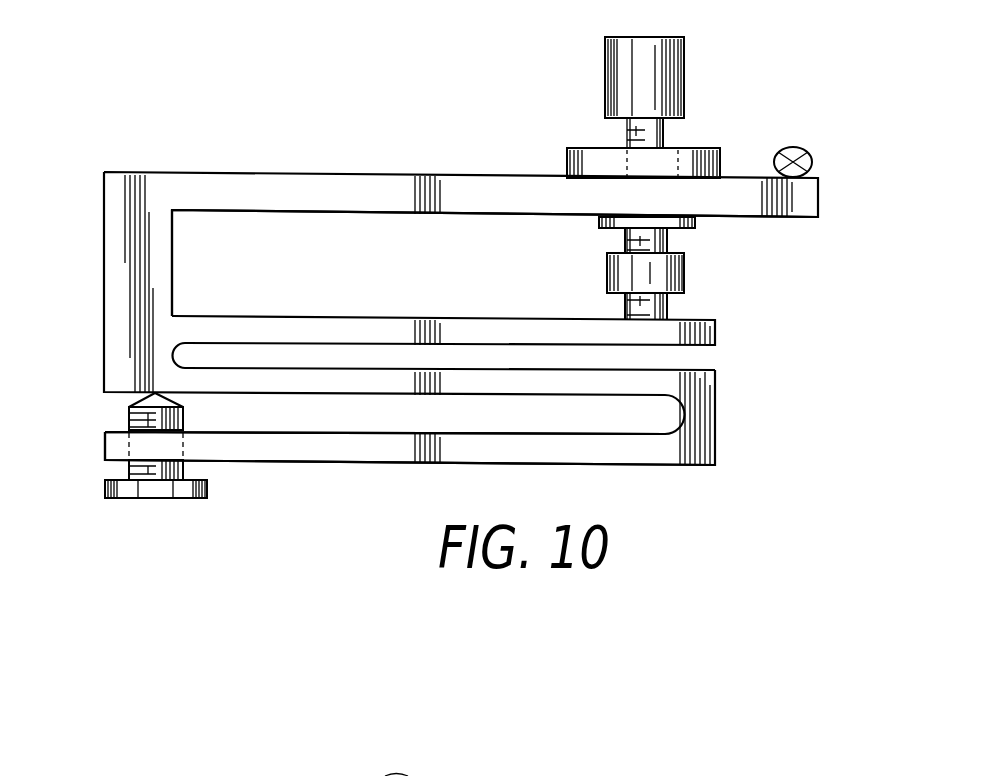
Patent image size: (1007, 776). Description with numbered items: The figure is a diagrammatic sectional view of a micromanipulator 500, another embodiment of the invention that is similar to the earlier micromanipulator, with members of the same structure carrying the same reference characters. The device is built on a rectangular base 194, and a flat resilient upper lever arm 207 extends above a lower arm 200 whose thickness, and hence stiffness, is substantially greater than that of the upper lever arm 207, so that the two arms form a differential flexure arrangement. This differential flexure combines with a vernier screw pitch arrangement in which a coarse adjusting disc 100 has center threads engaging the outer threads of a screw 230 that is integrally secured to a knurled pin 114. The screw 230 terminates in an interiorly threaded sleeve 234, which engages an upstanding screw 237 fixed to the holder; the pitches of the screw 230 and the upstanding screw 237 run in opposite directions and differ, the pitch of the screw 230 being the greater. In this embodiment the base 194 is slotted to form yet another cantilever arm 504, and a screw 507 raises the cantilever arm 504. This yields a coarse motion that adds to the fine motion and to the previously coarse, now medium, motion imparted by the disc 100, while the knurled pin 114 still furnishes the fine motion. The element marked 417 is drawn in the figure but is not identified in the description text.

The micromanipulator 500 is at (388, 133).
The knurled pin 114 is at (678, 66).
The coarse adjusting disc 100 is at (698, 148).
The indicator 417 is at (812, 158).
The upper lever arm 207 is at (357, 203).
The lower arm 200 is at (355, 320).
The screw 230 is at (662, 240).
The interiorly threaded sleeve 234 is at (684, 268).
The upstanding screw 237 is at (665, 303).
The cantilever arm 504 is at (622, 383).
The screw 507 is at (130, 418).
The base 194 is at (348, 450).